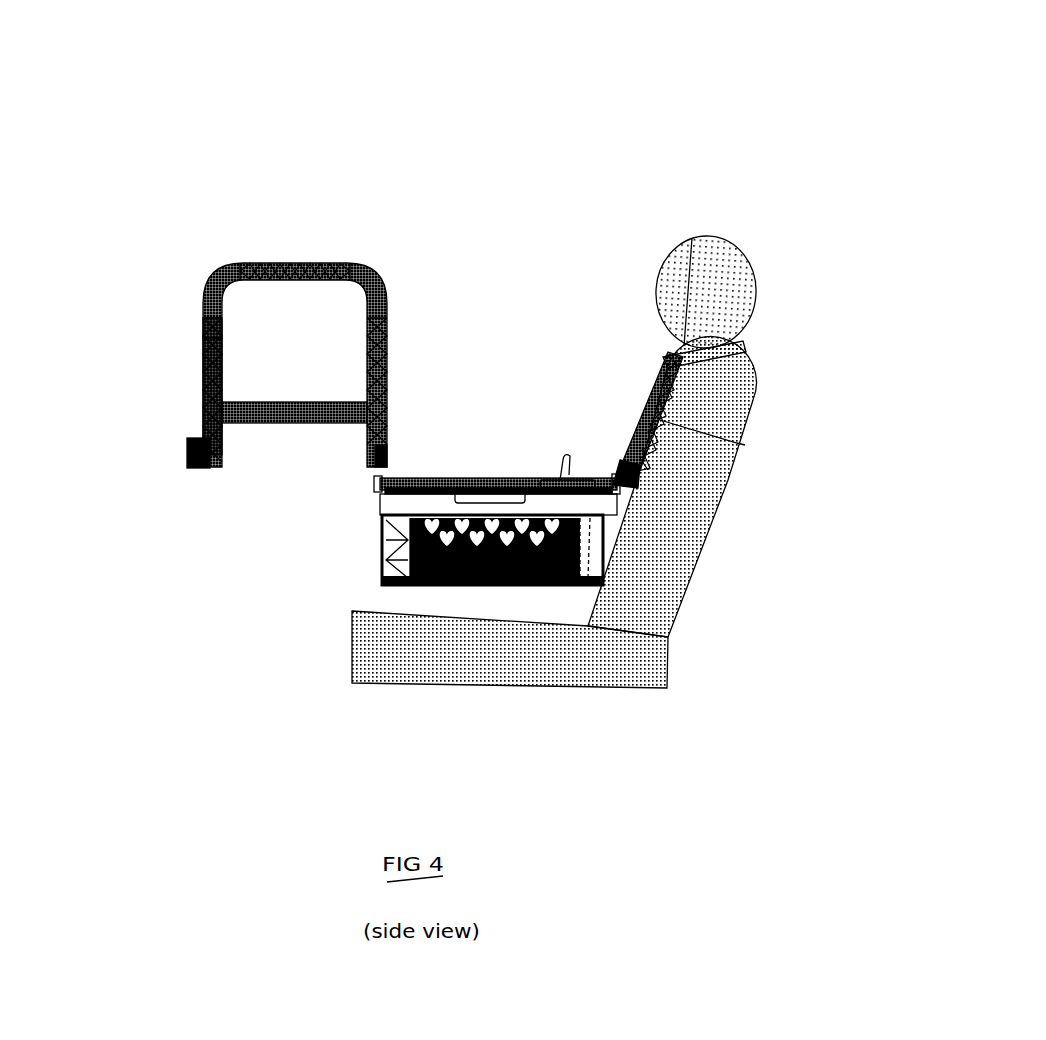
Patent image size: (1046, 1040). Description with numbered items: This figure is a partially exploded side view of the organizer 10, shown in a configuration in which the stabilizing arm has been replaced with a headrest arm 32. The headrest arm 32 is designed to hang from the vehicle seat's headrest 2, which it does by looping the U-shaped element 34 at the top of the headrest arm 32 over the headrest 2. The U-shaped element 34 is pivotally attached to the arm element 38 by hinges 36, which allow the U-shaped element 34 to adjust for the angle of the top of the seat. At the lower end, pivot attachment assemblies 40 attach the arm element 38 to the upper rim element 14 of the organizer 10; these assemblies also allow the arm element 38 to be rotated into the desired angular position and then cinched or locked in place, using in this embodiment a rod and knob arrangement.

The organizer 10 is at (690, 100).
The headrest 2 is at (735, 236).
The headrest arm 32 is at (580, 36).
The upper rim element 14 is at (378, 505).
The U-shaped element 34 is at (220, 252).
The hinge 36 is at (190, 333).
The arm element 38 is at (185, 397).
The pivot attachment assembly 40 is at (348, 453).